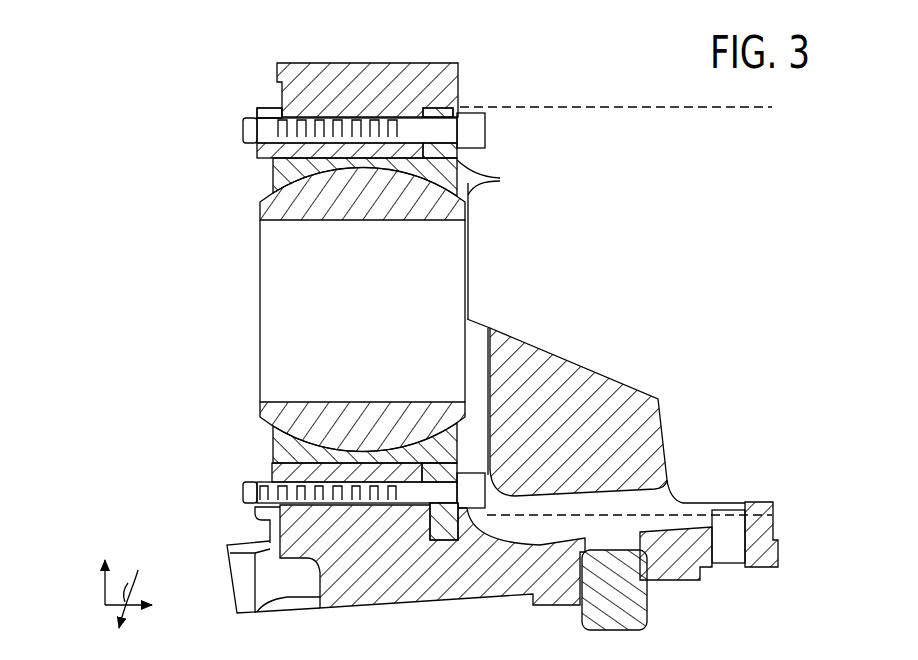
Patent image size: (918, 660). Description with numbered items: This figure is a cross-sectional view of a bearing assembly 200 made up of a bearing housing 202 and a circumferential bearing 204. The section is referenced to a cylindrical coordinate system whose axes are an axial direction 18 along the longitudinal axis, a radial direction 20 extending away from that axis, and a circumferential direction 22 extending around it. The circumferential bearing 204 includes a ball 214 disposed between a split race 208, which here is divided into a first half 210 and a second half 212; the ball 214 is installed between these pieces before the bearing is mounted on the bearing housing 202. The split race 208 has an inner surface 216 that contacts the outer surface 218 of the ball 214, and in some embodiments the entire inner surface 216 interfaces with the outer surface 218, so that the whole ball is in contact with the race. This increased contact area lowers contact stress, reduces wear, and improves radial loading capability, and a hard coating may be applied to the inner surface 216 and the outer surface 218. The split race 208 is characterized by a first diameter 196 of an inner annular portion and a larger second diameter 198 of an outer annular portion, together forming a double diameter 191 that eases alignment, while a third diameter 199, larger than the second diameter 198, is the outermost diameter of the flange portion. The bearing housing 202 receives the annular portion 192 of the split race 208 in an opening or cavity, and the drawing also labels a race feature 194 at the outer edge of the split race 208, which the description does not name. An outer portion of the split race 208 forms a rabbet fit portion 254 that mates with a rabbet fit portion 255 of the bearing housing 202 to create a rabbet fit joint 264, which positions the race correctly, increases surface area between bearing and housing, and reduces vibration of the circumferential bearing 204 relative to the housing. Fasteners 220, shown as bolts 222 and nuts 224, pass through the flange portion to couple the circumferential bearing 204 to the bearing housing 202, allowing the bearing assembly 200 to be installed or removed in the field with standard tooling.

The axial direction 18 is at (105, 608).
The radial direction 20 is at (104, 591).
The circumferential direction 22 is at (135, 586).
The double diameter 191 is at (93, 312).
The annular portion 192 is at (142, 160).
The outer race 194 is at (378, 260).
The first diameter 196 is at (275, 160).
The second diameter 198 is at (186, 158).
The third diameter 199 is at (806, 107).
The bearing assembly 200 is at (595, 65).
The bearing housing 202 is at (458, 63).
The circumferential bearing 204 is at (530, 265).
The split race 208 is at (441, 158).
The first half 210 is at (457, 165).
The second half 212 is at (263, 443).
The ball 214 is at (467, 207).
The inner surface 216 is at (395, 71).
The outer surface 218 is at (460, 197).
The fasteners 220 is at (254, 538).
The bolts 222 is at (485, 135).
The nuts 224 is at (258, 514).
The rabbet fit portion 254 is at (212, 104).
The rabbet fit portion 255 is at (220, 138).
The rabbet fit joint 264 is at (356, 145).